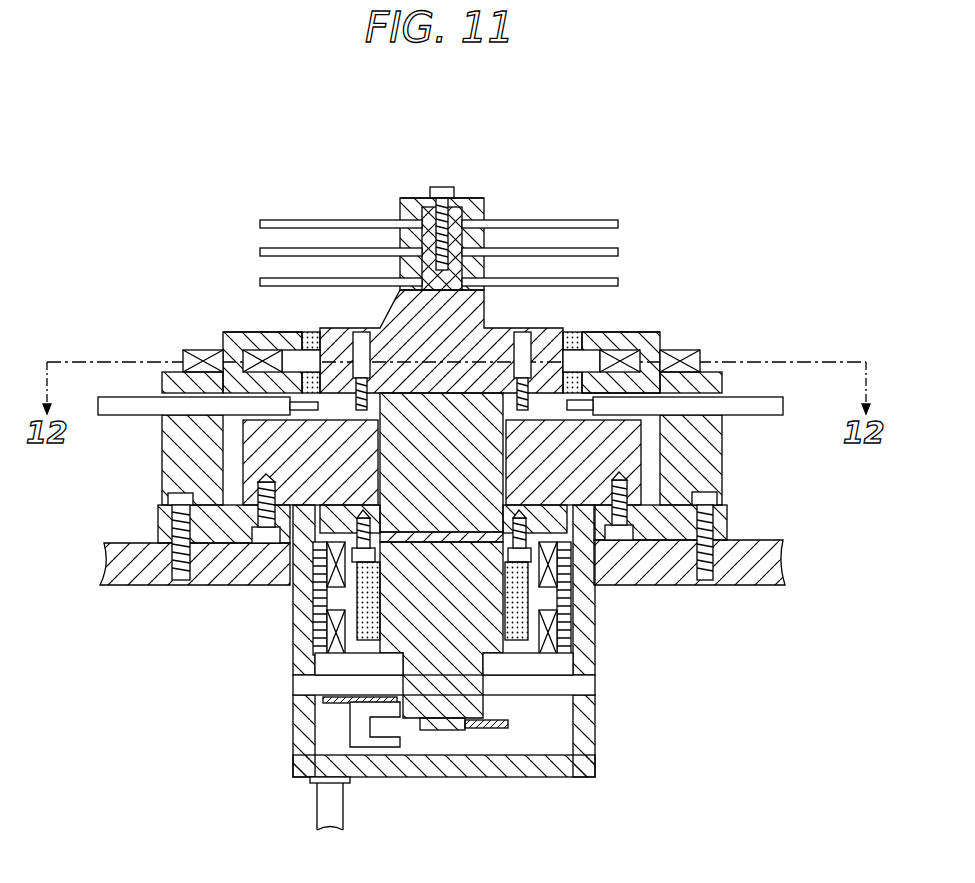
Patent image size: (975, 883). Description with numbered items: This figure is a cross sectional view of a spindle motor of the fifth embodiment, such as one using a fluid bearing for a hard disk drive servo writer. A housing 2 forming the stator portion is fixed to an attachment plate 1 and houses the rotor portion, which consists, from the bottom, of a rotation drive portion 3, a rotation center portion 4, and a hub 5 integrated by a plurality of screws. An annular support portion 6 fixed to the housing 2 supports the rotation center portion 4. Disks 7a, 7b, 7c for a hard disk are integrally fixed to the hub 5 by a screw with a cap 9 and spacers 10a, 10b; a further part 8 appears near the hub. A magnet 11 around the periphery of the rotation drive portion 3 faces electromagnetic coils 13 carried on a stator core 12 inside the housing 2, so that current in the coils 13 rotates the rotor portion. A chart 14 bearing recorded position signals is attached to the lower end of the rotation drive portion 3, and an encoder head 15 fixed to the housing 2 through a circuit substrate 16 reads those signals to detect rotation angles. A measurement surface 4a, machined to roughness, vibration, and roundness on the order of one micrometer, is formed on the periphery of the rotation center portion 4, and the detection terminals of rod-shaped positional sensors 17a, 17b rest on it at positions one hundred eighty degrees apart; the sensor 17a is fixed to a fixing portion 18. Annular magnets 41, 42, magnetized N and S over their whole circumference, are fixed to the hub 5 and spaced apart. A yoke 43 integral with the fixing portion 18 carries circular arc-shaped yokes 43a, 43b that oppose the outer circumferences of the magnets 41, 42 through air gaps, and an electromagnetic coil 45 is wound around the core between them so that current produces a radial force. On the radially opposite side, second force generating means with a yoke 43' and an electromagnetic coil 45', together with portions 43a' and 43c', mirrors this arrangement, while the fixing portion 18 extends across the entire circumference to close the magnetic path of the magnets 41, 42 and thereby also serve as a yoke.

The attachment plate 1 is at (140, 567).
The housing 2 is at (300, 757).
The rotation drive portion 3 is at (483, 642).
The rotation center portion 4 is at (472, 420).
The measurement surface 4a is at (712, 412).
The hub 5 is at (398, 298).
The annular support portion 6 is at (608, 455).
The disk 7a is at (281, 222).
The disk 7b is at (268, 250).
The disk 7c is at (268, 280).
The hub 8 is at (400, 210).
The screw with a cap 9 is at (412, 197).
The spacer 10a is at (480, 245).
The spacer 10b is at (486, 292).
The magnet 11 is at (355, 603).
The stator core 12 is at (565, 605).
The electromagnetic coils 13 is at (560, 623).
The chart 14 is at (498, 728).
The encoder head 15 is at (384, 740).
The circuit substrate 16 is at (336, 705).
The positional sensor 17a is at (773, 404).
The positional sensor 17b is at (127, 407).
The fixing portion 18 is at (720, 370).
The annular magnet 41 is at (618, 348).
The annular magnet 42 is at (572, 333).
The yoke 43 is at (651, 316).
The circular arc-shaped yoke 43a is at (620, 299).
The circular arc-shaped yoke 43b is at (628, 380).
The yoke 43' is at (227, 323).
The bearing holder portion 43a' is at (223, 279).
The bearing holder portion 43c' is at (151, 386).
The electromagnetic coil 45 is at (719, 329).
The electromagnetic coil 45' is at (155, 341).